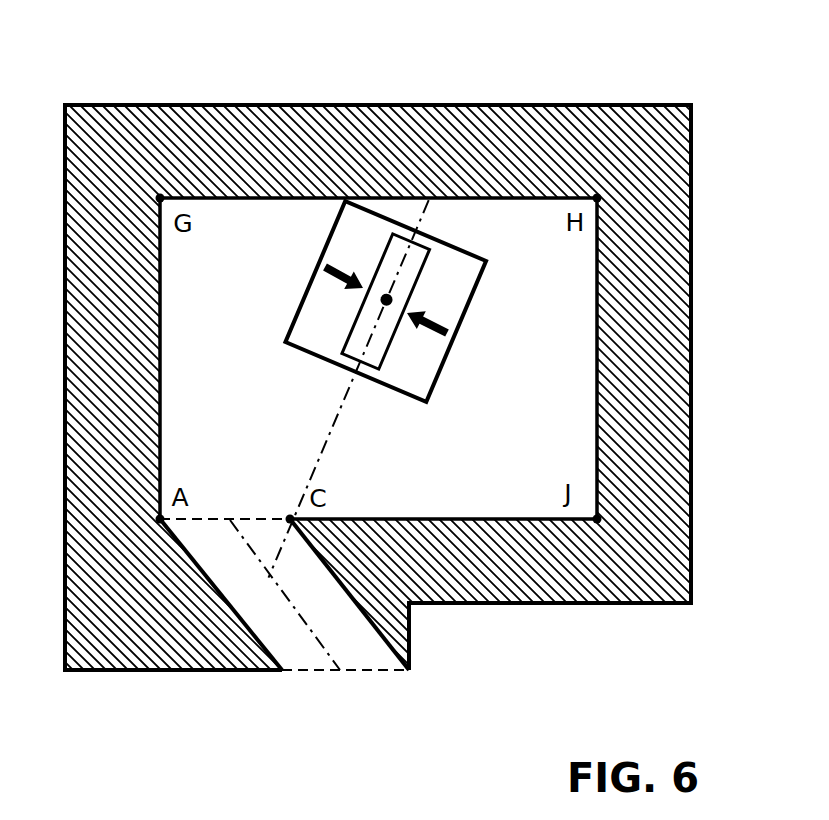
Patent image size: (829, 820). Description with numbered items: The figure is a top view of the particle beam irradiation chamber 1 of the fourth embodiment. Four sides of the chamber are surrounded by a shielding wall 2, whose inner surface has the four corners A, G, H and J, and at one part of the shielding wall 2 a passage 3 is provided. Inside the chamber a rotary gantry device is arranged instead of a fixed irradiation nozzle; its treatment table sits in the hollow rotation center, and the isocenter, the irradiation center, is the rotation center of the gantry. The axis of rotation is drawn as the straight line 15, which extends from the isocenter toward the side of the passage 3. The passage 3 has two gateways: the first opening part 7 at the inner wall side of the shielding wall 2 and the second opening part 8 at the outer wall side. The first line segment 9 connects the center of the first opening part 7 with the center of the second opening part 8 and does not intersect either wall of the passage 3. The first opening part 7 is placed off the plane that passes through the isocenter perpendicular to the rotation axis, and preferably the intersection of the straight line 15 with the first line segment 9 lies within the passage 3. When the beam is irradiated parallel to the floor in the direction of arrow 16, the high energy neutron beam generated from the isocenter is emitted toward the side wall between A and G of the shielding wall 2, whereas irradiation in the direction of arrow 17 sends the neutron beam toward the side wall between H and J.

The particle beam irradiation chamber 1 is at (478, 83).
The shielding wall 2 is at (225, 127).
The passage 3 is at (352, 645).
The first opening part 7 is at (210, 517).
The second opening part 8 is at (317, 673).
The first line segment 9 is at (290, 603).
The straight line 15 is at (323, 442).
The arrow 16 is at (450, 325).
The arrow 17 is at (305, 265).